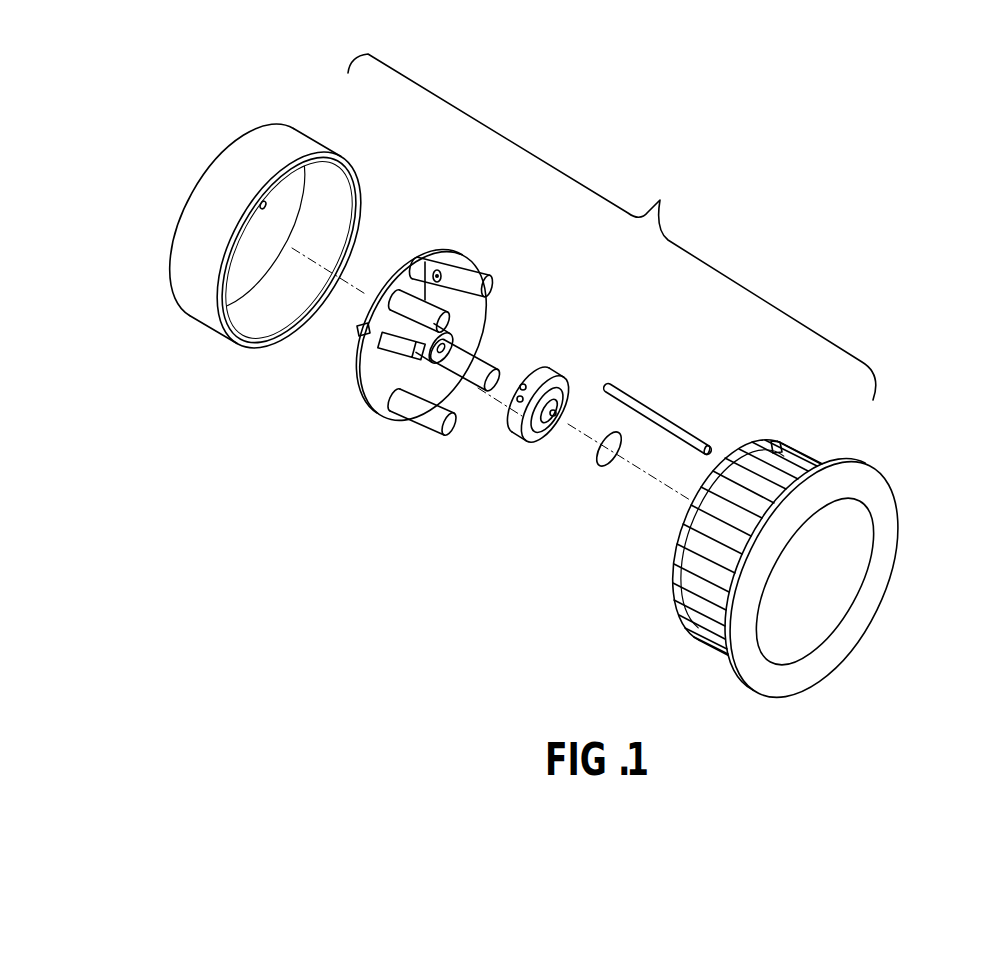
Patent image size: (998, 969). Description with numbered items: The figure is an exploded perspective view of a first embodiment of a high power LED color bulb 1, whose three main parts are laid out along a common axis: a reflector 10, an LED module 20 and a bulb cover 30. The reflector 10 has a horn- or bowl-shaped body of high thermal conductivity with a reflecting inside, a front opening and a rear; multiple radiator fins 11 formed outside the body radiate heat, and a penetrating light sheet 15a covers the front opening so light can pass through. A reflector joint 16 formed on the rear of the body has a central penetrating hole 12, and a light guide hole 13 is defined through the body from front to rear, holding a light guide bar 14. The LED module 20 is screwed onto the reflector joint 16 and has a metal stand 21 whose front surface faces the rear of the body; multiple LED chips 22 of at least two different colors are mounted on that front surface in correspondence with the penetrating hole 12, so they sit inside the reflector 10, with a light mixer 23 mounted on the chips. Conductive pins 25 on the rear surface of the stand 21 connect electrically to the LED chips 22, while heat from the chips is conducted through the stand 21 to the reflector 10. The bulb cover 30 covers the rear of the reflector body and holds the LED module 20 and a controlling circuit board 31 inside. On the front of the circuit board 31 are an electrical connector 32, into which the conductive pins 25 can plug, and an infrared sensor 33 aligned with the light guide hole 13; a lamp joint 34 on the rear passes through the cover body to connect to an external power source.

The high power LED color bulb 1 is at (612, 227).
The reflector 10 is at (786, 544).
The radiator fins 11 is at (796, 452).
The penetrating hole 12 is at (680, 598).
The light guide hole 13 is at (772, 478).
The light guide bar 14 is at (652, 412).
The penetrating light sheet 15a is at (845, 591).
The reflector joint 16 is at (680, 527).
The LED module 20 is at (524, 446).
The stand 21 is at (528, 423).
The LED chips 22 is at (572, 405).
The light mixer 23 is at (606, 462).
The conductive pins 25 is at (522, 390).
The bulb cover 30 is at (207, 302).
The controlling circuit board 31 is at (467, 322).
The electrical connector 32 is at (397, 420).
The infrared sensor 33 is at (437, 270).
The lamp joint 34 is at (365, 328).